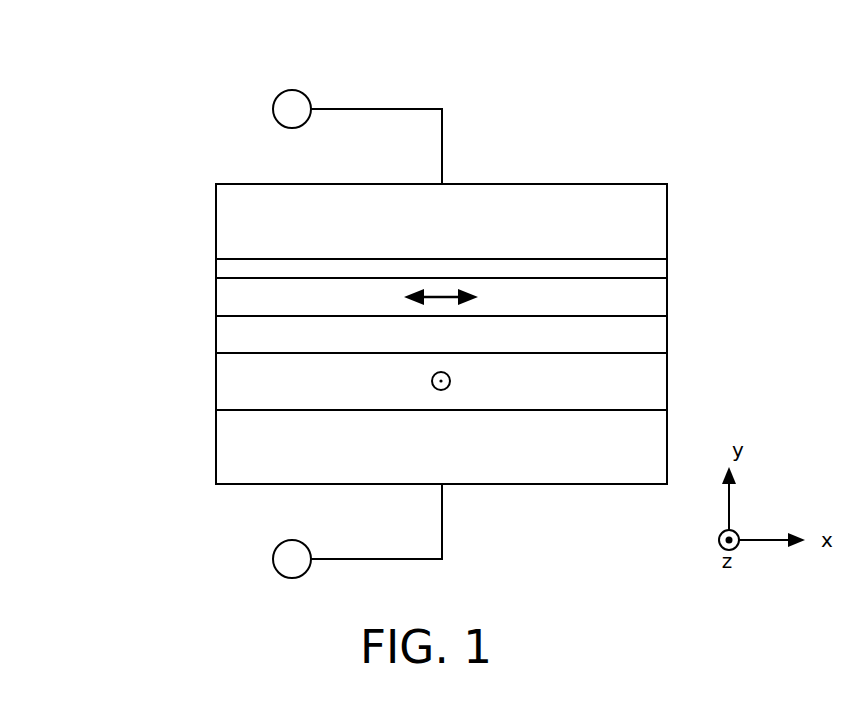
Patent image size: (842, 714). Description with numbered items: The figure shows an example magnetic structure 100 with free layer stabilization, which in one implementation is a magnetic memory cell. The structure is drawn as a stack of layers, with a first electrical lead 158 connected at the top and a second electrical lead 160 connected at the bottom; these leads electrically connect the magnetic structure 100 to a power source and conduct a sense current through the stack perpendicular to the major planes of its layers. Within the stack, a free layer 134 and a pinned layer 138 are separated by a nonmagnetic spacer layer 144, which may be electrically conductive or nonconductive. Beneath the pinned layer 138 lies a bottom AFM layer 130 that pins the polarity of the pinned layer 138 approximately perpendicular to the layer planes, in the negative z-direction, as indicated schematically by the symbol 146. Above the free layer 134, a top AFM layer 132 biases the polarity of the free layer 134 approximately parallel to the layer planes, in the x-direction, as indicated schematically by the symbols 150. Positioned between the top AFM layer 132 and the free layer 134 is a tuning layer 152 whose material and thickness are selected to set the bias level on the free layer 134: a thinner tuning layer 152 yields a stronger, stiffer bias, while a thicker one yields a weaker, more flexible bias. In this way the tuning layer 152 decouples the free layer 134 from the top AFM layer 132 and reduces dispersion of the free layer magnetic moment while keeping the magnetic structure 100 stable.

The magnetic structure 100 is at (175, 180).
The bottom AFM layer 130 is at (557, 457).
The top AFM layer 132 is at (557, 234).
The free layer 134 is at (557, 309).
The pinned layer 138 is at (557, 394).
The spacer layer 144 is at (557, 346).
The symbol 146 is at (433, 386).
The symbols 150 is at (412, 288).
The tuning layer 152 is at (667, 268).
The first electrical lead 158 is at (370, 109).
The second electrical lead 160 is at (442, 523).